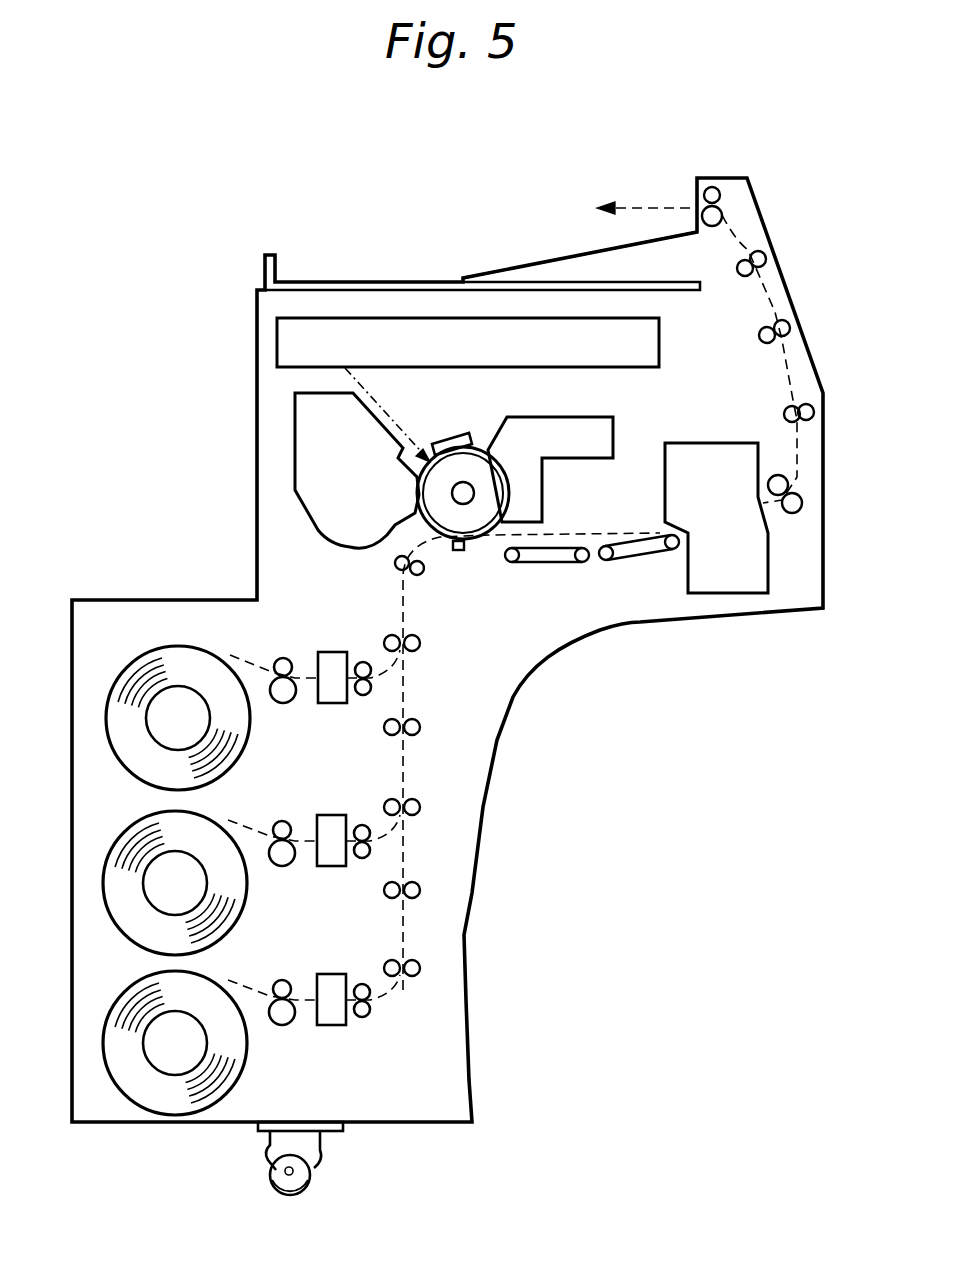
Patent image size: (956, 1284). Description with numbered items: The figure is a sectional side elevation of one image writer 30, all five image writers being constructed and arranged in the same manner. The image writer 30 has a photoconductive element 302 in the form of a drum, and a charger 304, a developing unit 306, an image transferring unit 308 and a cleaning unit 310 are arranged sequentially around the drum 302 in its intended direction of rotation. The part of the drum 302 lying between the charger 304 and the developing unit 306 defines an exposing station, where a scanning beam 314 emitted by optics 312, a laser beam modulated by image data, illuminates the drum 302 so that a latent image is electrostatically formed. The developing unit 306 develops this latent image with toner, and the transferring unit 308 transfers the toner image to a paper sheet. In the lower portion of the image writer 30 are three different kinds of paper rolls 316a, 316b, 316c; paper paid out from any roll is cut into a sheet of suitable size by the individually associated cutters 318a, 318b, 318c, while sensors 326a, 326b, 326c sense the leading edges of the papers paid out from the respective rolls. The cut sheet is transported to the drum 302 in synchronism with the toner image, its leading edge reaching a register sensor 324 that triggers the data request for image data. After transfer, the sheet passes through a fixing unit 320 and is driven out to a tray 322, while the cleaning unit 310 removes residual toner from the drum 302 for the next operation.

The image writer 30 is at (252, 330).
The photoconductive element 302 is at (488, 497).
The charger 304 is at (462, 441).
The developing unit 306 is at (323, 510).
The image transferring unit 308 is at (462, 551).
The cleaning unit 310 is at (613, 437).
The optics 312 is at (620, 366).
The scanning beam 314 is at (406, 413).
The paper roll 316a is at (150, 668).
The paper roll 316b is at (142, 842).
The paper roll 316c is at (135, 1008).
The cutter 318a is at (322, 705).
The cutter 318b is at (320, 868).
The cutter 318c is at (322, 1027).
The fixing unit 320 is at (728, 582).
The tray 322 is at (540, 260).
The register sensor 324 is at (408, 587).
The sensor 326a is at (384, 670).
The sensor 326b is at (384, 834).
The sensor 326c is at (384, 998).